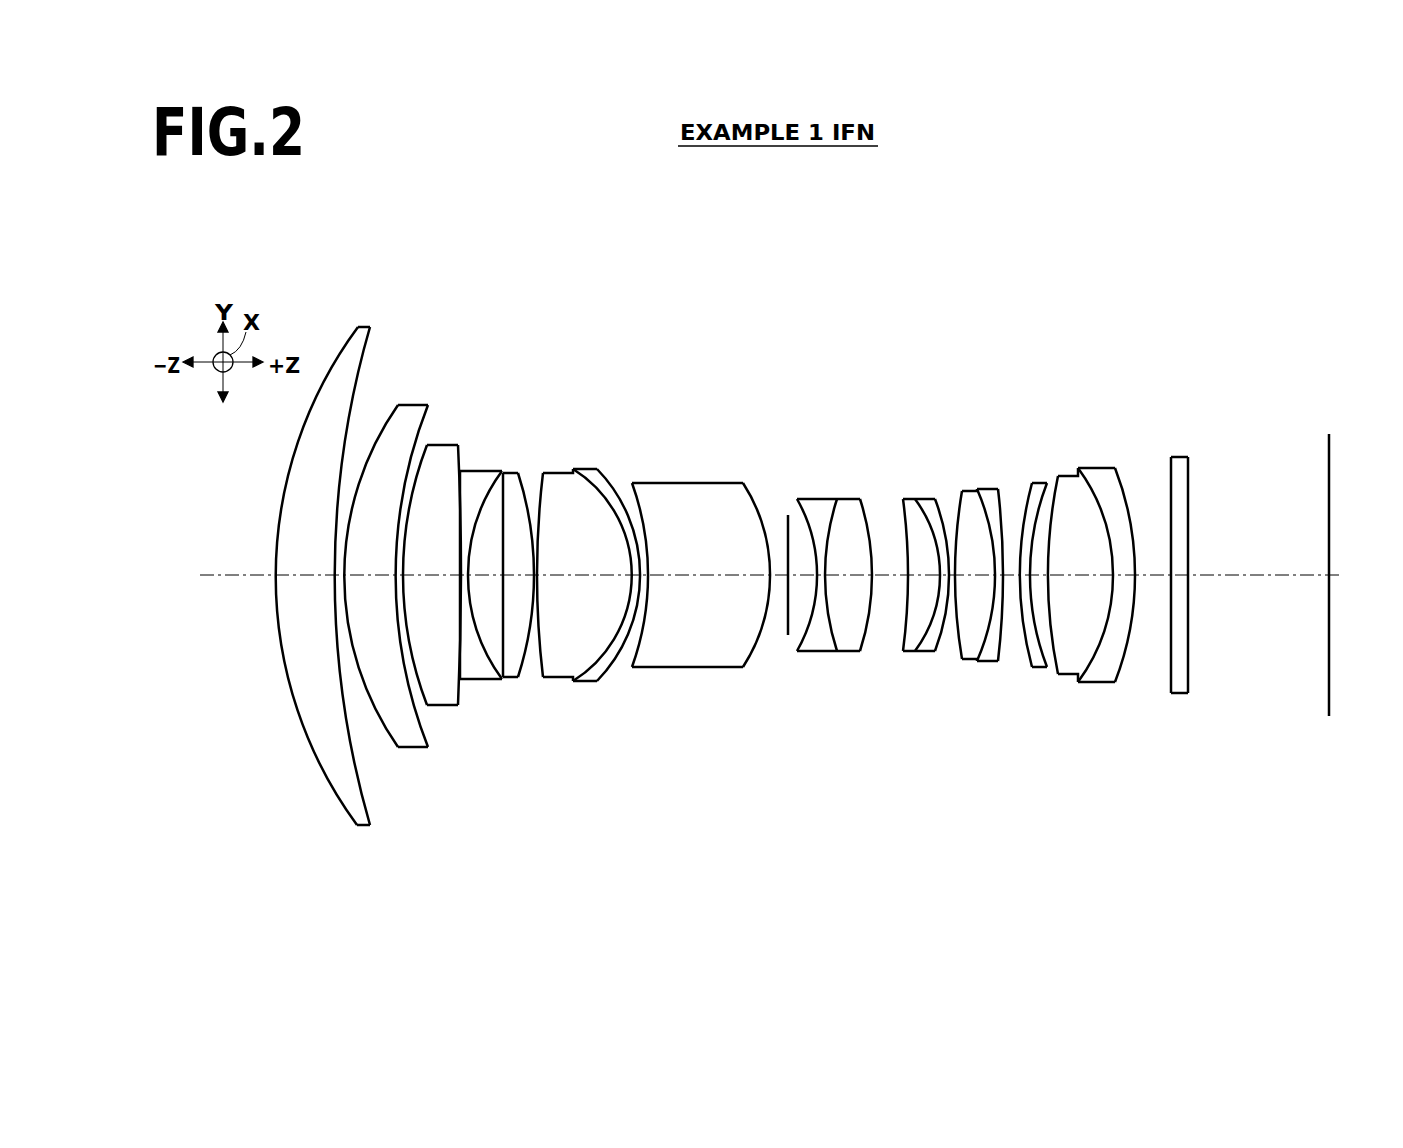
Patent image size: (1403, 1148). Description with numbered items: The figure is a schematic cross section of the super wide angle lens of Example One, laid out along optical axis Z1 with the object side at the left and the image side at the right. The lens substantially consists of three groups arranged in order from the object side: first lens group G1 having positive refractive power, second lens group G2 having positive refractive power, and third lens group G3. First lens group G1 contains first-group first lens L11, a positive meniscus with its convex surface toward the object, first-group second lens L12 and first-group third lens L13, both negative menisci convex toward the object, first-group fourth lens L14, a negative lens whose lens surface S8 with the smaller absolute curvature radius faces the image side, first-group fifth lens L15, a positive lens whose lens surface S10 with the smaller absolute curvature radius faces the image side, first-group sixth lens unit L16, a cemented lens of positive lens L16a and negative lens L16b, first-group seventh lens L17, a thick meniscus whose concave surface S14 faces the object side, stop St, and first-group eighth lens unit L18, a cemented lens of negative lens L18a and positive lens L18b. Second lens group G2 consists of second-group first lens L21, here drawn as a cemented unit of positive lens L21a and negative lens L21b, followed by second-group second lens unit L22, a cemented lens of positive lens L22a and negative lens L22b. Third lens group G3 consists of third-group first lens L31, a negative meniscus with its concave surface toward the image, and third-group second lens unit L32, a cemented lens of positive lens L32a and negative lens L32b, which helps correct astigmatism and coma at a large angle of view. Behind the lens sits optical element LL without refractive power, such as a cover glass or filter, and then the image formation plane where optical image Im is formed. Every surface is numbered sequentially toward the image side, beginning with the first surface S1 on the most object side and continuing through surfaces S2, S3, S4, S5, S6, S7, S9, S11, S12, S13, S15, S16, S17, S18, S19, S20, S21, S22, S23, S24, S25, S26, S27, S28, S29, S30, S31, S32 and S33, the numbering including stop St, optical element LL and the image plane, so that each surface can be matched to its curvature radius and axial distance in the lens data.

The first lens group G1 is at (838, 232).
The second lens group G2 is at (1042, 232).
The third lens group G3 is at (1205, 232).
The first-group first lens L11 is at (310, 573).
The first-group second lens L12 is at (401, 577).
The first-group third lens L13 is at (454, 559).
The first-group fourth lens L14 is at (502, 577).
The first-group fifth lens L15 is at (555, 559).
The first-group sixth lens unit L16 is at (645, 305).
The lens L16a is at (600, 601).
The lens L16b is at (641, 618).
The first-group seventh lens L17 is at (701, 559).
The first-group eighth lens unit L18 is at (840, 305).
The lens L18a is at (794, 601).
The lens L18b is at (832, 618).
The second-group first lens L21 is at (953, 271).
The lens L21a is at (900, 582).
The lens L21b is at (929, 575).
The second-group second lens unit L22 is at (1042, 346).
The lens L22a is at (981, 618).
The lens L22b is at (1016, 636).
The third-group first lens L31 is at (1066, 559).
The third-group second lens unit L32 is at (1205, 305).
The lens L32a is at (1107, 601).
The lens L32b is at (1141, 599).
The stop St is at (778, 654).
The optical element LL is at (1218, 601).
The optical image Im is at (1301, 662).
The optical axis Z1 is at (222, 575).
The first surface S1 is at (307, 733).
The second surface S2 is at (367, 793).
The third surface S3 is at (395, 747).
The fourth surface S4 is at (427, 740).
The fifth surface S5 is at (437, 707).
The sixth surface S6 is at (455, 700).
The seventh surface S7 is at (465, 690).
The lens surface S8 is at (505, 670).
The ninth surface S9 is at (512, 668).
The lens surface S10 is at (535, 668).
The eleventh surface S11 is at (555, 672).
The twelfth surface S12 is at (585, 678).
The thirteenth surface S13 is at (610, 680).
The concave surface S14 is at (640, 668).
The fifteenth surface S15 is at (750, 667).
The sixteenth surface S16 is at (785, 640).
The seventeenth surface S17 is at (805, 652).
The eighteenth surface S18 is at (840, 655).
The nineteenth surface S19 is at (865, 652).
The twentieth surface S20 is at (905, 652).
The twenty-first surface S21 is at (922, 652).
The twenty-second surface S22 is at (937, 652).
The twenty-third surface S23 is at (968, 660).
The twenty-fourth surface S24 is at (985, 662).
The twenty-fifth surface S25 is at (1000, 662).
The twenty-sixth surface S26 is at (1032, 670).
The twenty-seventh surface S27 is at (1047, 668).
The twenty-eighth surface S28 is at (1062, 675).
The twenty-ninth surface S29 is at (1085, 683).
The thirtieth surface S30 is at (1115, 683).
The thirty-first surface S31 is at (1171, 693).
The thirty-second surface S32 is at (1188, 693).
The thirty-third surface S33 is at (1328, 690).